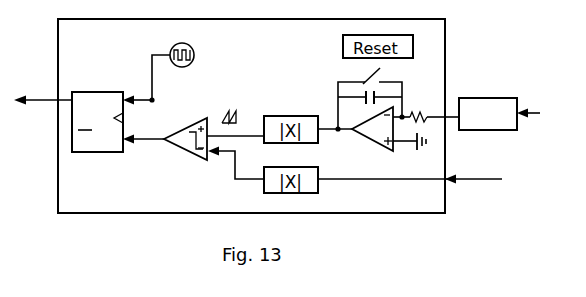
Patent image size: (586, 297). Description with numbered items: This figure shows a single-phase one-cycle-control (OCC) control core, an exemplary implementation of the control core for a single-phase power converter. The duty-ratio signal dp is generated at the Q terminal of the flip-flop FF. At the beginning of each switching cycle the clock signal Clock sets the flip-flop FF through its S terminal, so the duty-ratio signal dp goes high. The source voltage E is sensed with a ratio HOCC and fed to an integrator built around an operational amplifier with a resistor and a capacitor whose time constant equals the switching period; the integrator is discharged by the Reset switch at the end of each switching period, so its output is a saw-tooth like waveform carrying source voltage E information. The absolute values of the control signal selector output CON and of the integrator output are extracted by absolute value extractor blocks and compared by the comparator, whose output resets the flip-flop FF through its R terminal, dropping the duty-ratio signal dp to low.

The clock signal Clock is at (186, 74).
The integrator reset Reset is at (372, 64).
The sensing ratio Hocc HOCC is at (488, 114).
The source voltage E is at (536, 115).
The control signal selector output CON is at (430, 181).
The duty-ratio signal dp is at (43, 91).
The flip-flop FF is at (97, 122).